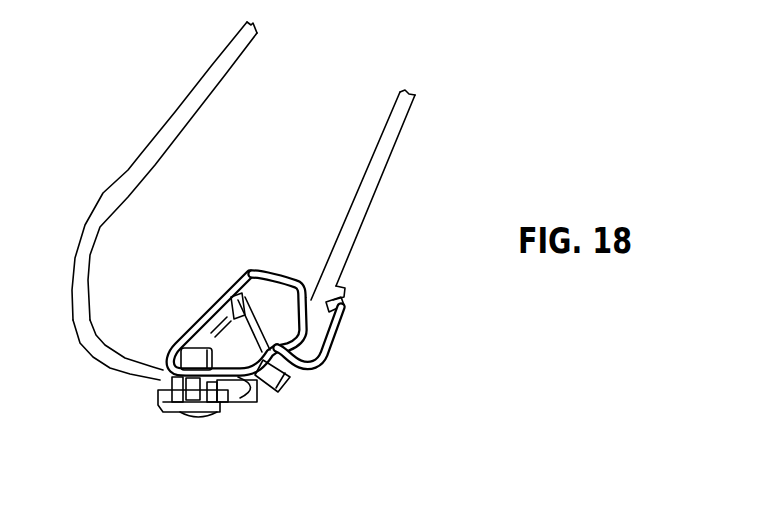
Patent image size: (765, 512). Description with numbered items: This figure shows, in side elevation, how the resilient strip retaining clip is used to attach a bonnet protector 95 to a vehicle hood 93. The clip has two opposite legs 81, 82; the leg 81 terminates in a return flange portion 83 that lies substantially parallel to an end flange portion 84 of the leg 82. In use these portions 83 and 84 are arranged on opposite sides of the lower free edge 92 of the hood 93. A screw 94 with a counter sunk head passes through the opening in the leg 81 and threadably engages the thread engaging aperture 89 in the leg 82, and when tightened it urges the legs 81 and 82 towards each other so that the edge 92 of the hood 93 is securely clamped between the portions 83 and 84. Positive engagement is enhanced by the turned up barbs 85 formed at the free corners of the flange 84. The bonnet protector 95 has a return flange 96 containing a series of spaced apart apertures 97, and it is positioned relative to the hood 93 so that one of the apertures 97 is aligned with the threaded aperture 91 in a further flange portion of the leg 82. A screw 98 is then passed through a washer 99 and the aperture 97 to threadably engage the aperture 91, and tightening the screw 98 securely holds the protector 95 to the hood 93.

The leg 81 is at (249, 268).
The leg 82 is at (335, 354).
The return flange portion 83 is at (299, 282).
The end flange portion 84 is at (333, 328).
The barbs 85 is at (345, 303).
The central aperture 89 is at (292, 365).
The central aperture 91 is at (176, 358).
The lower free edge 92 is at (349, 280).
The vehicle hood 93 is at (395, 167).
The screw 94 is at (288, 398).
The bonnet protector 95 is at (126, 156).
The return flange 96 is at (123, 371).
The apertures 97 is at (158, 388).
The screw 98 is at (187, 426).
The washer 99 is at (158, 410).